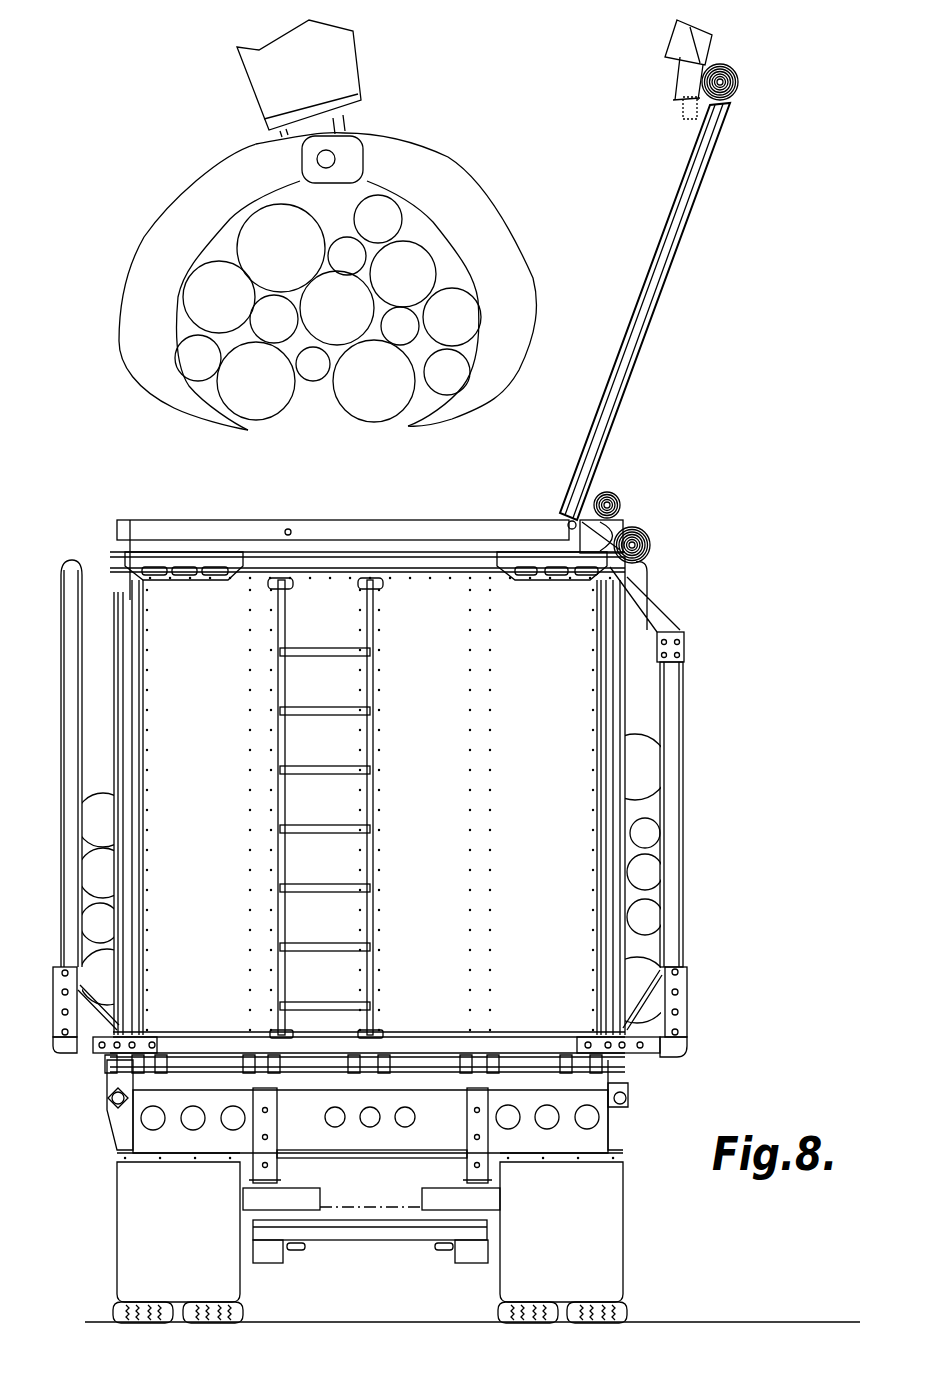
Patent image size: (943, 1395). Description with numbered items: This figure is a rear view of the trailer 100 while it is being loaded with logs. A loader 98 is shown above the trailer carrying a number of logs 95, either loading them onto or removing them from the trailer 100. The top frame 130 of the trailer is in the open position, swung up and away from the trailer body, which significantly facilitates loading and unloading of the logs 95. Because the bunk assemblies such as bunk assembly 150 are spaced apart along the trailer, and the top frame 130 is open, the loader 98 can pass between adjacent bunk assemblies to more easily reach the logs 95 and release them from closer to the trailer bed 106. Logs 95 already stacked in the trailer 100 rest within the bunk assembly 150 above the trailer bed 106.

The loader 98 is at (186, 208).
The logs 95 is at (269, 414).
The top frame 130 is at (670, 287).
The trailer 100 is at (729, 955).
The trailer bed 106 is at (614, 1077).
The bunk assembly 150 is at (689, 835).